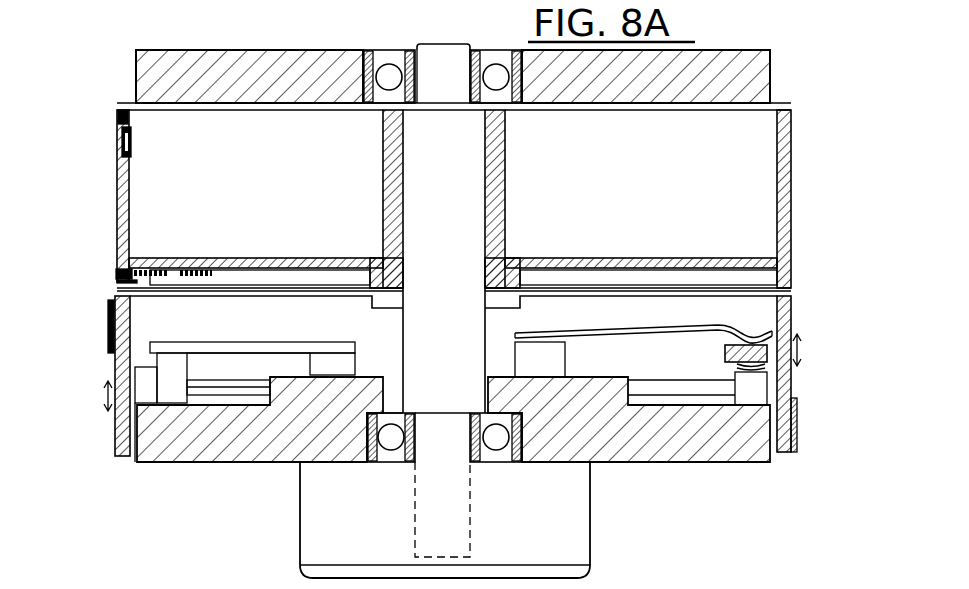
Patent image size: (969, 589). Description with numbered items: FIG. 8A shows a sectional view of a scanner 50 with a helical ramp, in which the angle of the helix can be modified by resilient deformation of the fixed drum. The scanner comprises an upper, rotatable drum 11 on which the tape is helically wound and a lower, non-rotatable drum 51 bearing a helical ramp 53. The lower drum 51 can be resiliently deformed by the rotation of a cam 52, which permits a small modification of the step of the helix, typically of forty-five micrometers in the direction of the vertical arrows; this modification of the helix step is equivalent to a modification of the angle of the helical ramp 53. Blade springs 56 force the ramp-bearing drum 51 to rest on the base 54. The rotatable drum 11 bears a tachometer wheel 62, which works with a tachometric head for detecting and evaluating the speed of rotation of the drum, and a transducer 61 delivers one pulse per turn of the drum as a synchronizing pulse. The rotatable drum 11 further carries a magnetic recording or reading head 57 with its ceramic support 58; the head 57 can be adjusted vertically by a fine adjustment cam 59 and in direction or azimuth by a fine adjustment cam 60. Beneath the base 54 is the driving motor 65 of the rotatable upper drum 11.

The upper rotatable drum 11 is at (793, 187).
The motor assembly 50 is at (257, 488).
The lower non-rotatable drum 51 is at (791, 318).
The cam 52 is at (768, 378).
The helical ramp 53 is at (112, 330).
The base 54 is at (715, 430).
The blade springs 56 is at (638, 330).
The magnetic recording or reading head 57 is at (117, 281).
The ceramic support 58 is at (117, 272).
The fine adjustment cam 59 is at (148, 258).
The fine adjustment cam 60 is at (202, 258).
The transducer 61 is at (118, 147).
The tachometer wheel 62 is at (117, 114).
The driving motor 65 is at (580, 497).